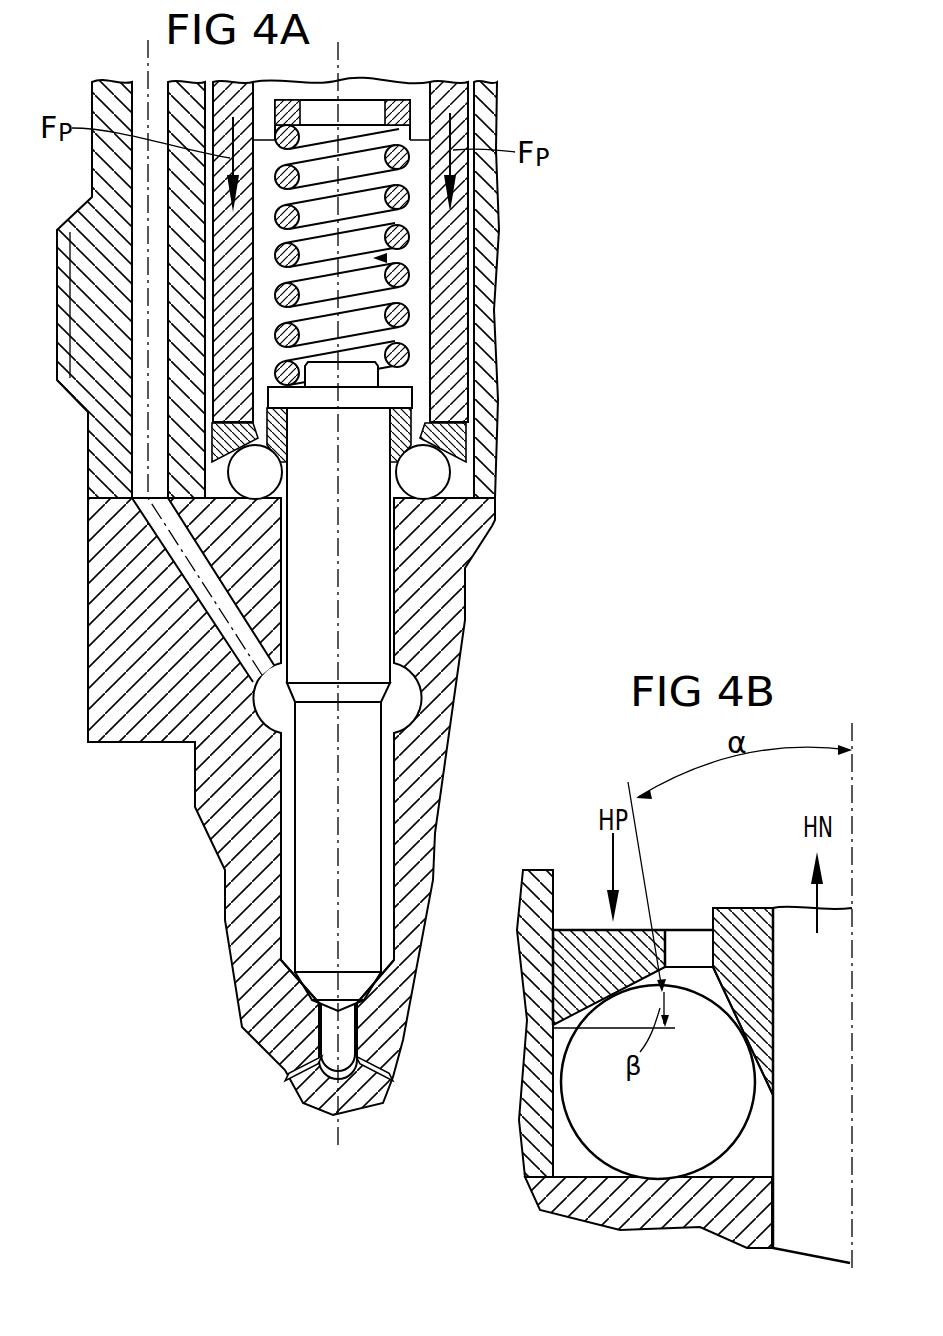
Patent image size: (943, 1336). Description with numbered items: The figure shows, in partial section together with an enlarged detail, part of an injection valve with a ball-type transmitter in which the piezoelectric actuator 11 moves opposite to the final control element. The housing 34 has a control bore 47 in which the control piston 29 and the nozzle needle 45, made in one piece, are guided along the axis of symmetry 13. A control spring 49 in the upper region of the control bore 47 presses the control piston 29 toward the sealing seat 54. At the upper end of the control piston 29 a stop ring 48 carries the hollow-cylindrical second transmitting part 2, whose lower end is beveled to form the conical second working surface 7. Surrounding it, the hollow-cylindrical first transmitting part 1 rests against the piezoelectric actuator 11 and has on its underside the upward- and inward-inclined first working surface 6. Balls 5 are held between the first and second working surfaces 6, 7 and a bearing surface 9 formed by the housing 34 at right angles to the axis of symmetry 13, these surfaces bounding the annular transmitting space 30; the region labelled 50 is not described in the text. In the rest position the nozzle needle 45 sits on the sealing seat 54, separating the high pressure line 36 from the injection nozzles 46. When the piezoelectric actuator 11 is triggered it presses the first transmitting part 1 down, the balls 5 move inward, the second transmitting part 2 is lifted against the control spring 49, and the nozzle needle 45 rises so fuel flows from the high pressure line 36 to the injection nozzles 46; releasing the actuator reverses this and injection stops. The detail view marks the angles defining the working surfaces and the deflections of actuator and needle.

In FIG. 4A, the first transmitting part 1 is at (217, 462).
In FIG. 4B, the first transmitting part 1 is at (635, 950).
In FIG. 4B, the second transmitting part 2 is at (745, 933).
In FIG. 4B, the balls 5 is at (713, 1123).
In FIG. 4A, the first working surface 6 is at (212, 440).
In FIG. 4B, the first working surface 6 is at (595, 985).
In FIG. 4B, the second working surface 7 is at (760, 1014).
In FIG. 4B, the bearing surface 9 is at (598, 1187).
In FIG. 4A, the piezoelectric actuator 11 is at (227, 235).
In FIG. 4A, the axis of symmetry 13 is at (340, 790).
In FIG. 4B, the axis of symmetry 13 is at (850, 795).
In FIG. 4B, the control piston 29 is at (807, 1213).
In FIG. 4A, the transmitting space 30 is at (217, 480).
In FIG. 4A, the housing 34 is at (457, 547).
In FIG. 4B, the housing 34 is at (540, 977).
In FIG. 4A, the high pressure line 36 is at (175, 560).
In FIG. 4A, the nozzle needle 45 is at (365, 860).
In FIG. 4A, the injection nozzles 46 is at (293, 1075).
In FIG. 4A, the control bore 47 is at (384, 258).
In FIG. 4A, the stop ring 48 is at (400, 397).
In FIG. 4A, the control spring 49 is at (400, 276).
In FIG. 4B, the gap 50 is at (683, 943).
In FIG. 4A, the sealing seat 54 is at (313, 1003).